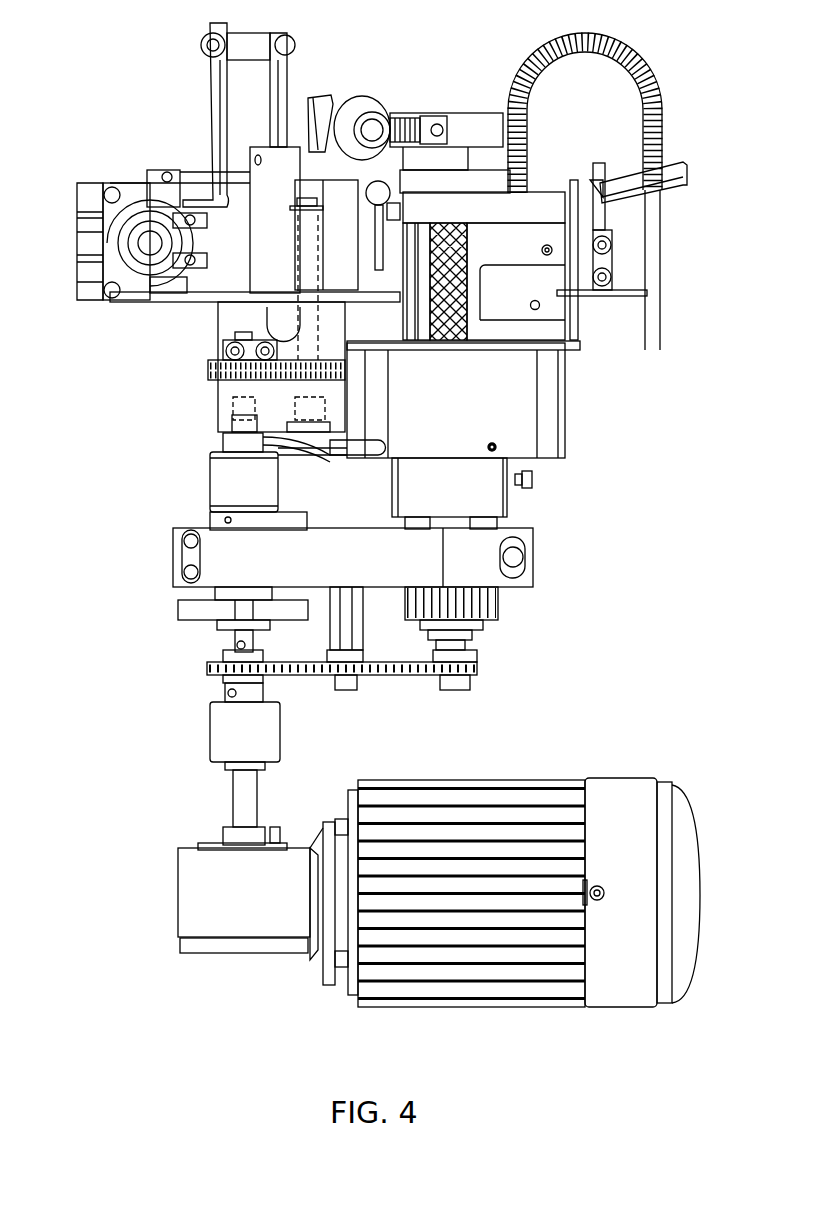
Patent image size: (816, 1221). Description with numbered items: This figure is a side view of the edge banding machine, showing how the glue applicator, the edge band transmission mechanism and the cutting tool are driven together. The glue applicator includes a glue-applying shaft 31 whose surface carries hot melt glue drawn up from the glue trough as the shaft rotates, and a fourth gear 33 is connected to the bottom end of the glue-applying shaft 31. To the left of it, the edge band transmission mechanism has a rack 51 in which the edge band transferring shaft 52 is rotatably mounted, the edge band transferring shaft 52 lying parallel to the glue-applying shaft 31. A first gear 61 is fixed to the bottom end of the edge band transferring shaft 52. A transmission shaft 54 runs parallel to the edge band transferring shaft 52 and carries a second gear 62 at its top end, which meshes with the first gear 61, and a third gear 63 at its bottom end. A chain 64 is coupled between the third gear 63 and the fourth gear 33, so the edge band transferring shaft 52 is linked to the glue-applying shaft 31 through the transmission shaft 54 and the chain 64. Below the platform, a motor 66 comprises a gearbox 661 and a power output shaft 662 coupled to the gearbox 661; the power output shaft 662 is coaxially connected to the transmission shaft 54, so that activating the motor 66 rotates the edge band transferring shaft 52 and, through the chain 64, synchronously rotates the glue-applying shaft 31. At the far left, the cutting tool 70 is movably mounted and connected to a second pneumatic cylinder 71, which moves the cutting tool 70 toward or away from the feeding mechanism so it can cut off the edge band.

The second pneumatic cylinder 71 is at (87, 223).
The cutting tool 70 is at (213, 243).
The edge band transferring shaft 52 is at (295, 253).
The rack 51 is at (343, 195).
The glue-applying shaft 31 is at (475, 342).
The second gear 62 is at (208, 375).
The first gear 61 is at (345, 375).
The transmission shaft 54 is at (232, 408).
The third gear 63 is at (207, 663).
The fourth gear 33 is at (478, 672).
The chain 64 is at (405, 676).
The power output shaft 662 is at (248, 790).
The gearbox 661 is at (247, 920).
The motor 66 is at (630, 797).